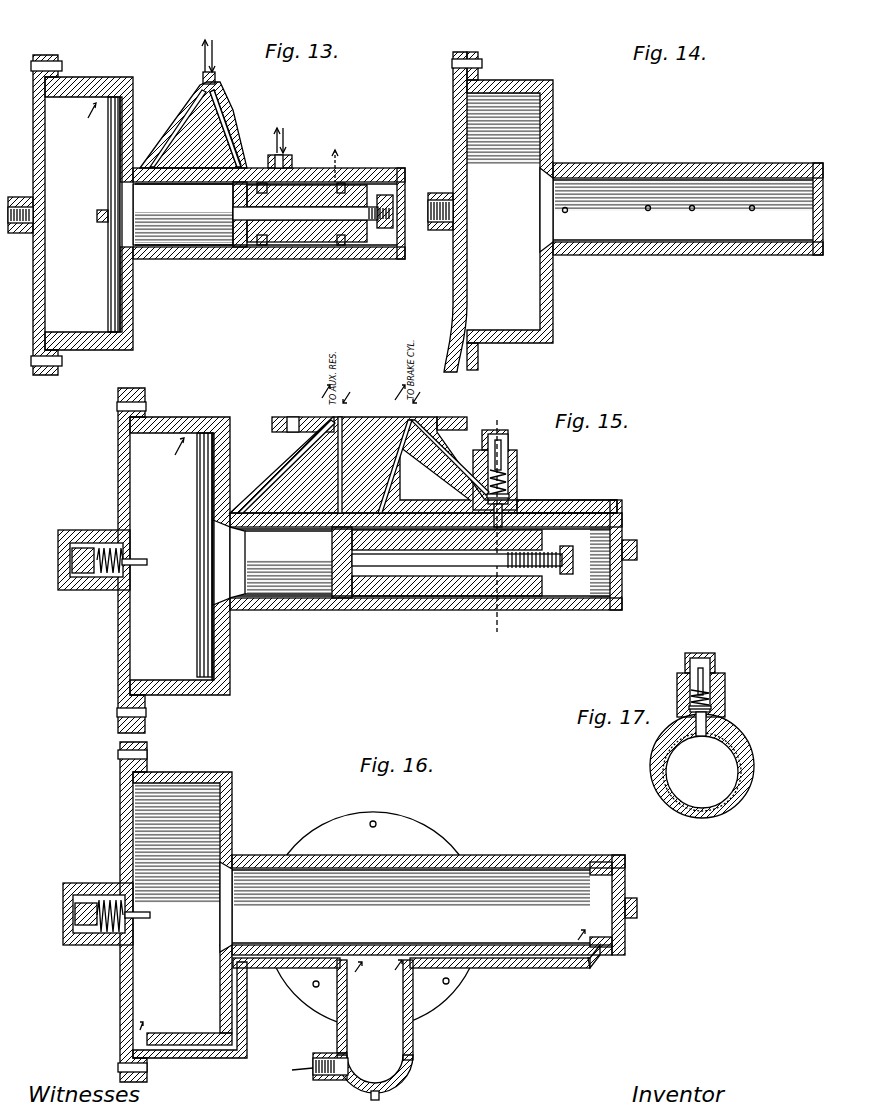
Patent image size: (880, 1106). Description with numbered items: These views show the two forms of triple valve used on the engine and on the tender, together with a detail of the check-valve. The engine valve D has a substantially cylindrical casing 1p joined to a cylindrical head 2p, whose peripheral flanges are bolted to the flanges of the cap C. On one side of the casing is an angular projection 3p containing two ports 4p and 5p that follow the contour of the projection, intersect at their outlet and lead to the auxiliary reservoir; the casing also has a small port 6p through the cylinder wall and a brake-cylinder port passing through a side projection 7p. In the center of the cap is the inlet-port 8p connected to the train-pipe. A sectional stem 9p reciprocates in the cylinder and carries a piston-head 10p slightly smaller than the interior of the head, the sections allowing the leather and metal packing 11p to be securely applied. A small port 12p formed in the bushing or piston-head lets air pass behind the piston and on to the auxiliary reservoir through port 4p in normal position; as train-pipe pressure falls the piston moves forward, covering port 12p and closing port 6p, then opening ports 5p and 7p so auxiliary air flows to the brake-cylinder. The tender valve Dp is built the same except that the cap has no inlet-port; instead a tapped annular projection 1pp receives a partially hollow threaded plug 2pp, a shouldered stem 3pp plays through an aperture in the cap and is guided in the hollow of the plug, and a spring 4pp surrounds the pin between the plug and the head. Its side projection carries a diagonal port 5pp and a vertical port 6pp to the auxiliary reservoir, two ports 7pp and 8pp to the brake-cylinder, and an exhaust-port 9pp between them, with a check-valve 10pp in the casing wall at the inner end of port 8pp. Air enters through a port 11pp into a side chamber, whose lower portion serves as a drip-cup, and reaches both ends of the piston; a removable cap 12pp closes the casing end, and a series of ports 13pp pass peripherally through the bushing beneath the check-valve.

In FIG. 13, the cap C is at (33, 297).
In FIG. 14, the cap C is at (459, 212).
In FIG. 15, the cap C is at (123, 560).
In FIG. 16, the cap C is at (123, 912).
In FIG. 13, the triple valve D is at (327, 230).
In FIG. 15, the triple valve Dp is at (467, 578).
In FIG. 13, the cylindrical casing 1p is at (269, 223).
In FIG. 14, the cylindrical casing 1p is at (688, 220).
In FIG. 15, the cylindrical casing 1p is at (426, 565).
In FIG. 16, the cylindrical casing 1p is at (428, 917).
In FIG. 17, the cylindrical casing 1p is at (708, 766).
In FIG. 13, the cylindrical head 2p is at (89, 206).
In FIG. 14, the cylindrical head 2p is at (510, 201).
In FIG. 15, the cylindrical head 2p is at (195, 417).
In FIG. 16, the cylindrical head 2p is at (190, 903).
In FIG. 13, the angular projection 3p is at (232, 114).
In FIG. 13, the port 4p is at (178, 137).
In FIG. 14, the port 4p is at (572, 219).
In FIG. 13, the port 5p is at (232, 136).
In FIG. 14, the port 5p is at (649, 219).
In FIG. 13, the small port 6p is at (340, 163).
In FIG. 14, the small port 6p is at (754, 219).
In FIG. 13, the projection 7p is at (292, 163).
In FIG. 14, the projection 7p is at (694, 219).
In FIG. 13, the inlet-port 8p is at (12, 233).
In FIG. 14, the inlet-port 8p is at (433, 212).
In FIG. 13, the stem 9p is at (183, 214).
In FIG. 13, the piston-head 10p is at (108, 184).
In FIG. 13, the packing 11p is at (231, 214).
In FIG. 13, the port 12p is at (124, 82).
In FIG. 15, the port 12p is at (222, 417).
In FIG. 15, the tapped annular projection 1pp is at (100, 592).
In FIG. 16, the tapped annular projection 1pp is at (100, 946).
In FIG. 15, the threaded plug 2pp is at (62, 555).
In FIG. 16, the threaded plug 2pp is at (63, 908).
In FIG. 15, the shouldered stem 3pp is at (145, 563).
In FIG. 16, the shouldered stem 3pp is at (145, 919).
In FIG. 15, the spring 4pp is at (105, 542).
In FIG. 16, the spring 4pp is at (105, 894).
In FIG. 15, the diagonal port 5pp is at (262, 487).
In FIG. 15, the vertical port 6pp is at (341, 417).
In FIG. 15, the port 7pp is at (395, 449).
In FIG. 15, the port 8pp is at (425, 425).
In FIG. 15, the exhaust-port 9pp is at (450, 507).
In FIG. 15, the check-valve 10pp is at (510, 500).
In FIG. 17, the check-valve 10pp is at (720, 700).
In FIG. 16, the port 11pp is at (318, 1075).
In FIG. 15, the removable cap 12pp is at (637, 535).
In FIG. 16, the removable cap 12pp is at (626, 925).
In FIG. 15, the ports 13pp is at (540, 505).
In FIG. 17, the ports 13pp is at (738, 746).